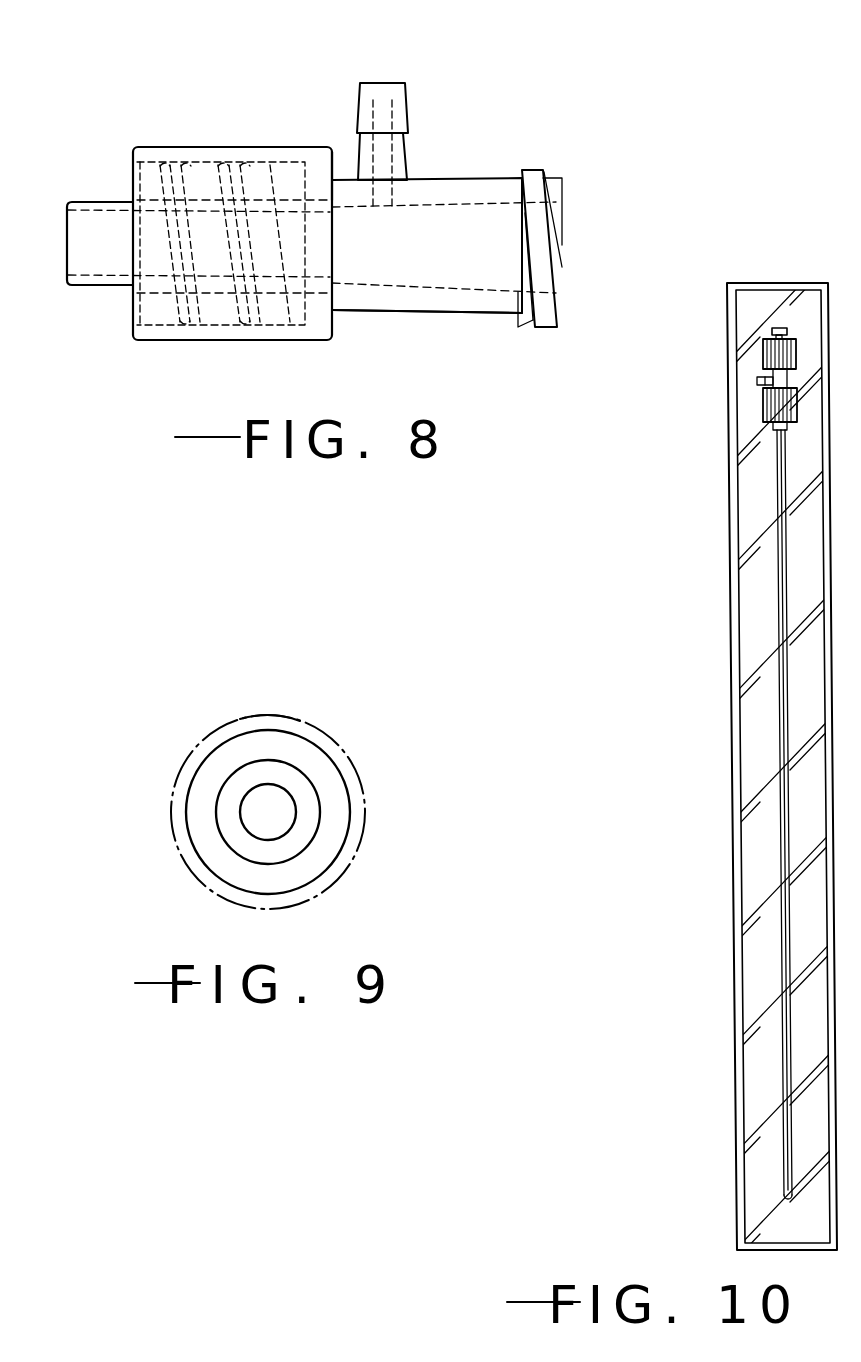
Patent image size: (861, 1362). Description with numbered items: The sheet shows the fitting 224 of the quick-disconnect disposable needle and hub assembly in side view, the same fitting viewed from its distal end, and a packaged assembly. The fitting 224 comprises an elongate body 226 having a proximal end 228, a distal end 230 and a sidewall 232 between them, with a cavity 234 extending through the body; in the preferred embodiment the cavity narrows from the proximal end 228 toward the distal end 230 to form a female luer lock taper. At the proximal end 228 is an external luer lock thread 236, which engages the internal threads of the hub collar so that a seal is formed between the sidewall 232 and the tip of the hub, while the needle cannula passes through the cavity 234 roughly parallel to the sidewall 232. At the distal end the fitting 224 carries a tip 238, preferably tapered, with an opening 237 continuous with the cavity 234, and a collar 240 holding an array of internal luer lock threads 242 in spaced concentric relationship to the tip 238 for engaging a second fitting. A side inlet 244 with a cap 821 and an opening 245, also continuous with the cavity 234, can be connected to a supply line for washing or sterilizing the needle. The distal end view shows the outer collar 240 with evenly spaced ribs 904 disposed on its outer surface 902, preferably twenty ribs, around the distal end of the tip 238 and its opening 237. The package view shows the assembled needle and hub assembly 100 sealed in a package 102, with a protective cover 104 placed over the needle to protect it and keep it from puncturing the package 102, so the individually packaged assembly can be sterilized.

In FIG. 10, the needle and hub assembly 100 is at (770, 499).
In FIG. 10, the package 102 is at (732, 648).
In FIG. 10, the protective cover 104 is at (778, 722).
In FIG. 8, the fitting 224 is at (566, 76).
In FIG. 8, the elongate body 226 is at (467, 317).
In FIG. 8, the proximal end 228 is at (560, 310).
In FIG. 8, the distal end 230 is at (325, 147).
In FIG. 8, the sidewall 232 is at (392, 300).
In FIG. 8, the cavity 234 is at (483, 210).
In FIG. 8, the external luer lock thread 236 is at (540, 168).
In FIG. 8, the opening 237 is at (80, 243).
In FIG. 9, the opening 237 is at (272, 812).
In FIG. 8, the tip 238 is at (67, 208).
In FIG. 9, the tip 238 is at (302, 798).
In FIG. 8, the collar 240 is at (150, 147).
In FIG. 9, the collar 240 is at (364, 706).
In FIG. 8, the internal luer lock threads 242 is at (186, 142).
In FIG. 8, the inlet 244 is at (408, 158).
In FIG. 8, the opening 245 is at (384, 82).
In FIG. 8, the cap 821 is at (408, 105).
In FIG. 9, the outer surface 902 is at (282, 715).
In FIG. 9, the ribs 904 is at (267, 714).